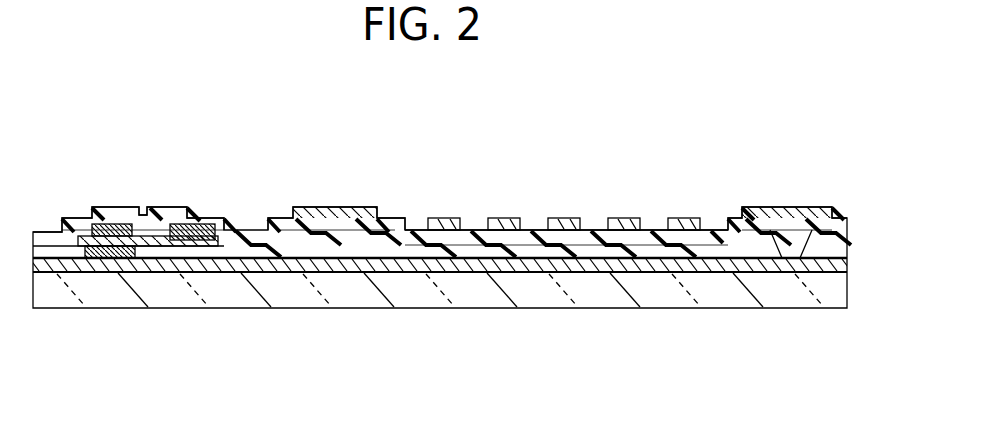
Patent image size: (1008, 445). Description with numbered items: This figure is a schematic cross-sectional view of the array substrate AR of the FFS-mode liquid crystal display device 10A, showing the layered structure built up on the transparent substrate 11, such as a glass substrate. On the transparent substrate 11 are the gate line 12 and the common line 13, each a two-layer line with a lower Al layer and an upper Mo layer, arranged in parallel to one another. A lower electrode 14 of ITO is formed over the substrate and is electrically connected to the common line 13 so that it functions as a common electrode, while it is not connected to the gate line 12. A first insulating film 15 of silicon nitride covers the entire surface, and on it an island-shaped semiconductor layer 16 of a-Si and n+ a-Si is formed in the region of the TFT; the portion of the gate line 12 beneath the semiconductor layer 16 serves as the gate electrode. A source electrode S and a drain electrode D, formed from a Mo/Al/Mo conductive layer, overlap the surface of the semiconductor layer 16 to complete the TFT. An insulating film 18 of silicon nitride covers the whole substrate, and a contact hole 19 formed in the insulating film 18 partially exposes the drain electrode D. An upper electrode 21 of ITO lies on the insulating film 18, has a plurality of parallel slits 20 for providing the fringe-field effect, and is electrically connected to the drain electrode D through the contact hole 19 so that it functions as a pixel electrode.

The FFS-mode liquid crystal display device 10A is at (342, 107).
The transparent substrate 11 is at (603, 302).
The gate line 12 is at (157, 258).
The common line 13 is at (788, 262).
The lower electrode 14 is at (467, 265).
The first insulating film 15 is at (268, 265).
The semiconductor layer 16 is at (162, 222).
The insulating film 18 is at (525, 260).
The contact hole 19 is at (325, 207).
The slit 20 is at (644, 205).
The upper electrode 21 is at (447, 219).
The source electrode S is at (95, 260).
The drain electrode D is at (187, 262).
The thin film transistor TFT is at (232, 358).
The array substrate AR is at (858, 217).